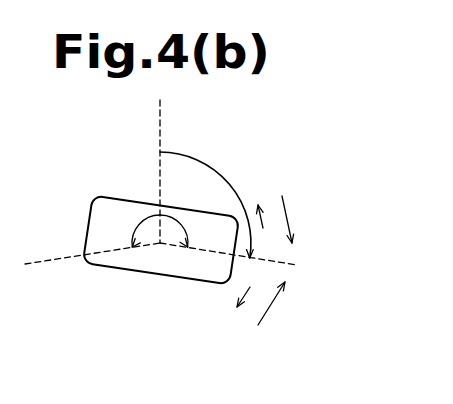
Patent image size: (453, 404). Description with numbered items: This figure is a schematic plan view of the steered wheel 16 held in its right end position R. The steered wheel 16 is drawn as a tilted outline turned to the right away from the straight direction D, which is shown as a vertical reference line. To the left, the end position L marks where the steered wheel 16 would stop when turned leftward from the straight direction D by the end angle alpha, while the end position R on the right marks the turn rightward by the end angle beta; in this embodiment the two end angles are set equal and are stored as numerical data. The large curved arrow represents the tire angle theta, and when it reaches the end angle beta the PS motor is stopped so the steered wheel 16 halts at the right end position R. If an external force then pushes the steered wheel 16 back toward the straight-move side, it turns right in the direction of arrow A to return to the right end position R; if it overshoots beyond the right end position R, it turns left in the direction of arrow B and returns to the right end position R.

The steered wheel 16 is at (183, 283).
The straight direction D is at (158, 122).
The end position L is at (43, 261).
The end position R is at (282, 262).
The arrow A is at (275, 207).
The arrow B is at (261, 313).